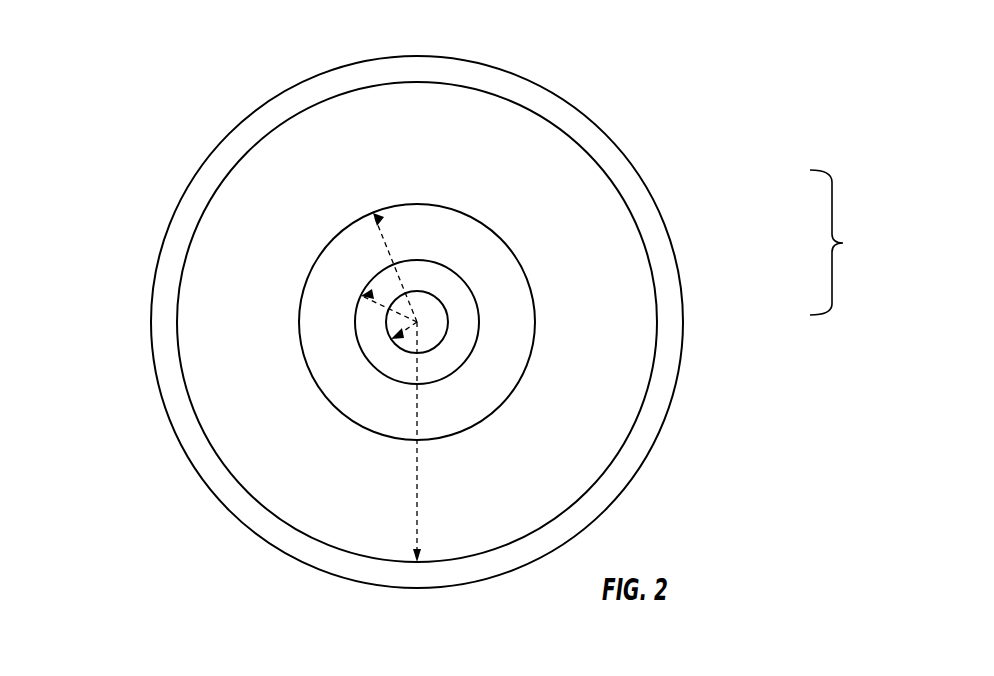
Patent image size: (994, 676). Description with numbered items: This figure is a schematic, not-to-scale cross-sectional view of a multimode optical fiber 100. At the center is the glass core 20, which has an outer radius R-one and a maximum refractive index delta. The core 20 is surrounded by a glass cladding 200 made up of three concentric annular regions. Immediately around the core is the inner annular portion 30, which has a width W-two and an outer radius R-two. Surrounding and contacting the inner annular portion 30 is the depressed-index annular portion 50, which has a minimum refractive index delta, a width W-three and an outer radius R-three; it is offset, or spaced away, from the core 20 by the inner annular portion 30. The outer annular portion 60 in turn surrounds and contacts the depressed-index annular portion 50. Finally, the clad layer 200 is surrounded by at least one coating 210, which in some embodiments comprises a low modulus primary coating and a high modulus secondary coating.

The multimode optical fiber 100 is at (155, 184).
The coating 210 is at (180, 418).
The glass cladding 200 is at (845, 242).
The outer annular portion 60 is at (580, 240).
The depressed-index annular portion 50 is at (482, 286).
The inner annular portion 30 is at (462, 327).
The glass core 20 is at (435, 335).